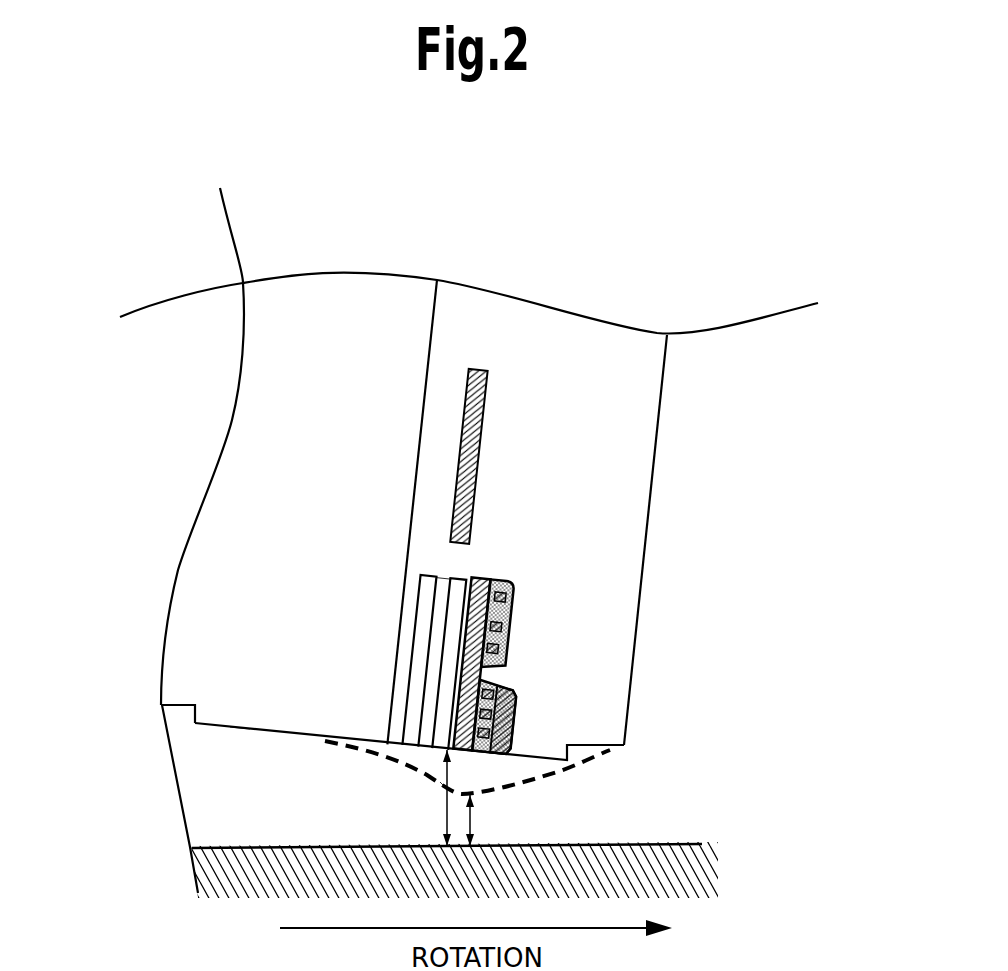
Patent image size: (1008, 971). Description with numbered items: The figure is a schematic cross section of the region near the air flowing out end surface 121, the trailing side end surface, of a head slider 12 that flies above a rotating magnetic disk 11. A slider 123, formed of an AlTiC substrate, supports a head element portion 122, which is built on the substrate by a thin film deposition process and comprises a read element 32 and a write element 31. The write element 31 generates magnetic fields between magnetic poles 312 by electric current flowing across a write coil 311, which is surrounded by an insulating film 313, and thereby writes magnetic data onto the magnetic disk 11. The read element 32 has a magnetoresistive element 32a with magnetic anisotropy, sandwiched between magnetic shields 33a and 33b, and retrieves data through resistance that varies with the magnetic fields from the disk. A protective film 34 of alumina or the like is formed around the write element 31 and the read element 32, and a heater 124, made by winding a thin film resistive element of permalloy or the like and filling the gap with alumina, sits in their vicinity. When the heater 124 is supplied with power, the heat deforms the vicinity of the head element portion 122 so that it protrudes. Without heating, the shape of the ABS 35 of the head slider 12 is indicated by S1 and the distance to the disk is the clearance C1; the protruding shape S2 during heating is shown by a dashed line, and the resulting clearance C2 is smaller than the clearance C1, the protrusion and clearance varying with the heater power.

The magnetic disk 11 is at (697, 842).
The head slider 12 is at (508, 273).
The air flowing out end surface 121 is at (659, 417).
The head element portion 122 is at (696, 546).
The slider 123 is at (172, 708).
The heater 124 is at (478, 470).
The write element 31 is at (524, 683).
The write coil 311 is at (513, 593).
The magnetic poles 312 is at (513, 710).
The insulating film 313 is at (513, 635).
The read element 32 is at (430, 748).
The magnetoresistive element 32a is at (426, 782).
The magnetic shield 33a is at (457, 577).
The magnetic shield 33b is at (417, 598).
The protective film 34 is at (427, 377).
The ABS 35 is at (230, 727).
The clearance C1 is at (429, 798).
The clearance C2 is at (496, 820).
The shape of ABS in non-heating S1 is at (375, 745).
The protruding shape S2 is at (542, 780).